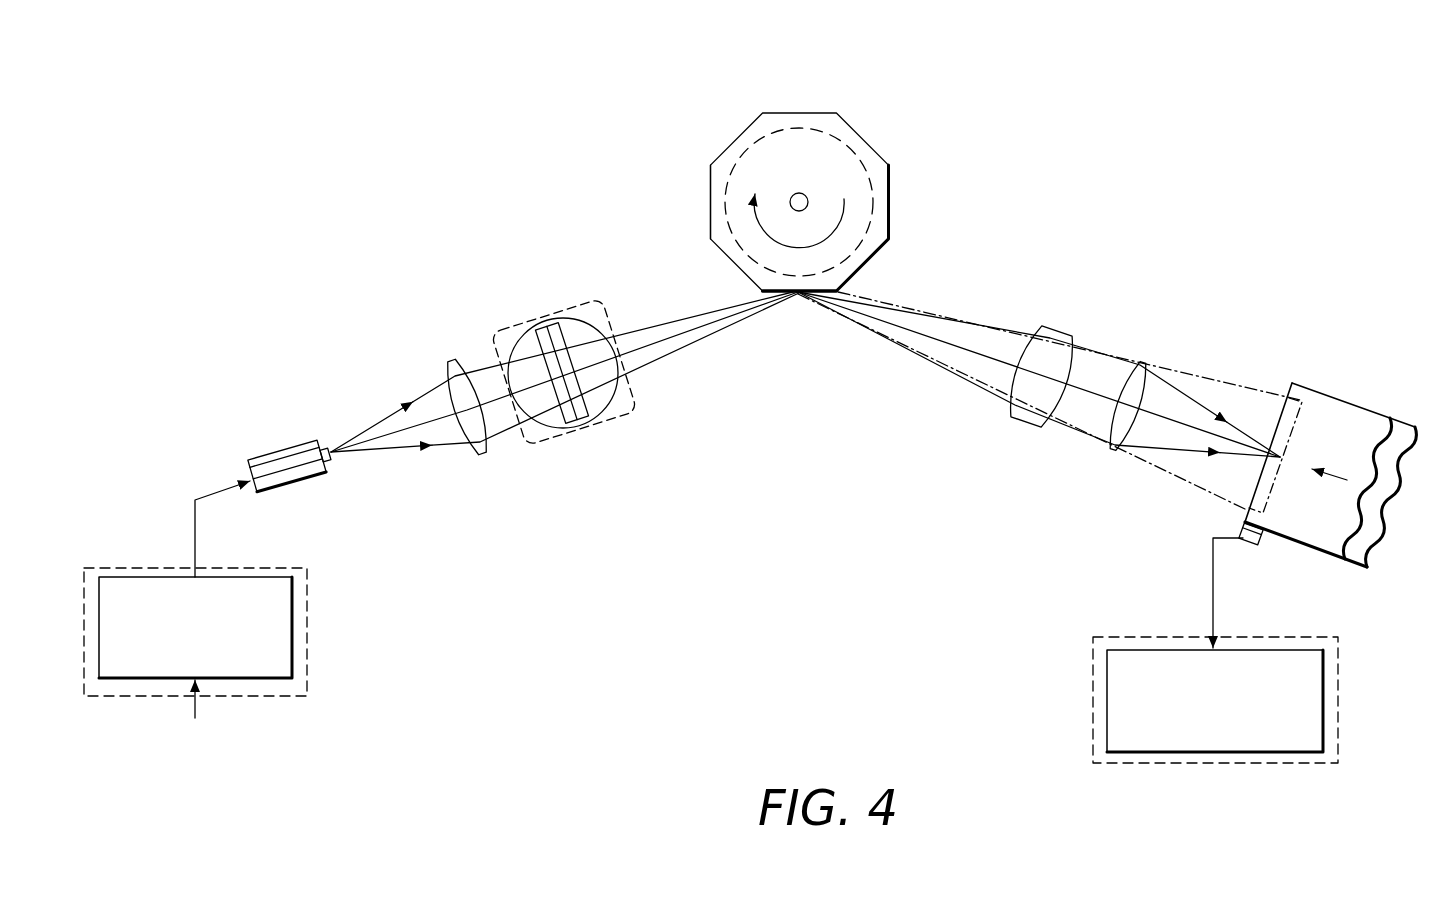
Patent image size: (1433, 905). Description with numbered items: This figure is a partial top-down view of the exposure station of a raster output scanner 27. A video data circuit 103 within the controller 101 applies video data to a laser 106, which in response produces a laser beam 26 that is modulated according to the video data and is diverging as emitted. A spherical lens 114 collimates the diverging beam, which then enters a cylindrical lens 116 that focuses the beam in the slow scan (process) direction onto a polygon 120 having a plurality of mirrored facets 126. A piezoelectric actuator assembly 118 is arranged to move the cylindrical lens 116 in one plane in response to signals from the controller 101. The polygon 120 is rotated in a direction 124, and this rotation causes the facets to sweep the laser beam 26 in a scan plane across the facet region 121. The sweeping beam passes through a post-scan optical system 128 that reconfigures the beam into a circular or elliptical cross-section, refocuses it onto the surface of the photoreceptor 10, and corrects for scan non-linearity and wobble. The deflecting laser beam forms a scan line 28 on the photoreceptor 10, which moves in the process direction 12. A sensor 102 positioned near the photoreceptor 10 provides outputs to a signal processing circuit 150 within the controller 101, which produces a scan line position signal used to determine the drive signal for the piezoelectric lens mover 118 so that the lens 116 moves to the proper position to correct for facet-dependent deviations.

The raster output scanner 27 is at (682, 67).
The polygon 120 is at (837, 113).
The direction 124 is at (843, 200).
The mirrored facets 126 is at (708, 204).
The reflecting facet 121 is at (798, 300).
The laser beam 26 is at (688, 312).
The piezoelectric actuator assembly 118 is at (514, 323).
The cylindrical lens 116 is at (577, 416).
The spherical lens 114 is at (483, 453).
The laser 106 is at (293, 485).
The controller 101 is at (173, 568).
The video data circuit 103 is at (217, 577).
The post-scan optical system 128 is at (1165, 348).
The scan line 28 is at (1300, 422).
The process direction 12 is at (1321, 468).
The photoreceptor 10 is at (1310, 535).
The sensor 102 is at (1242, 530).
The signal processing circuit 150 is at (1288, 650).